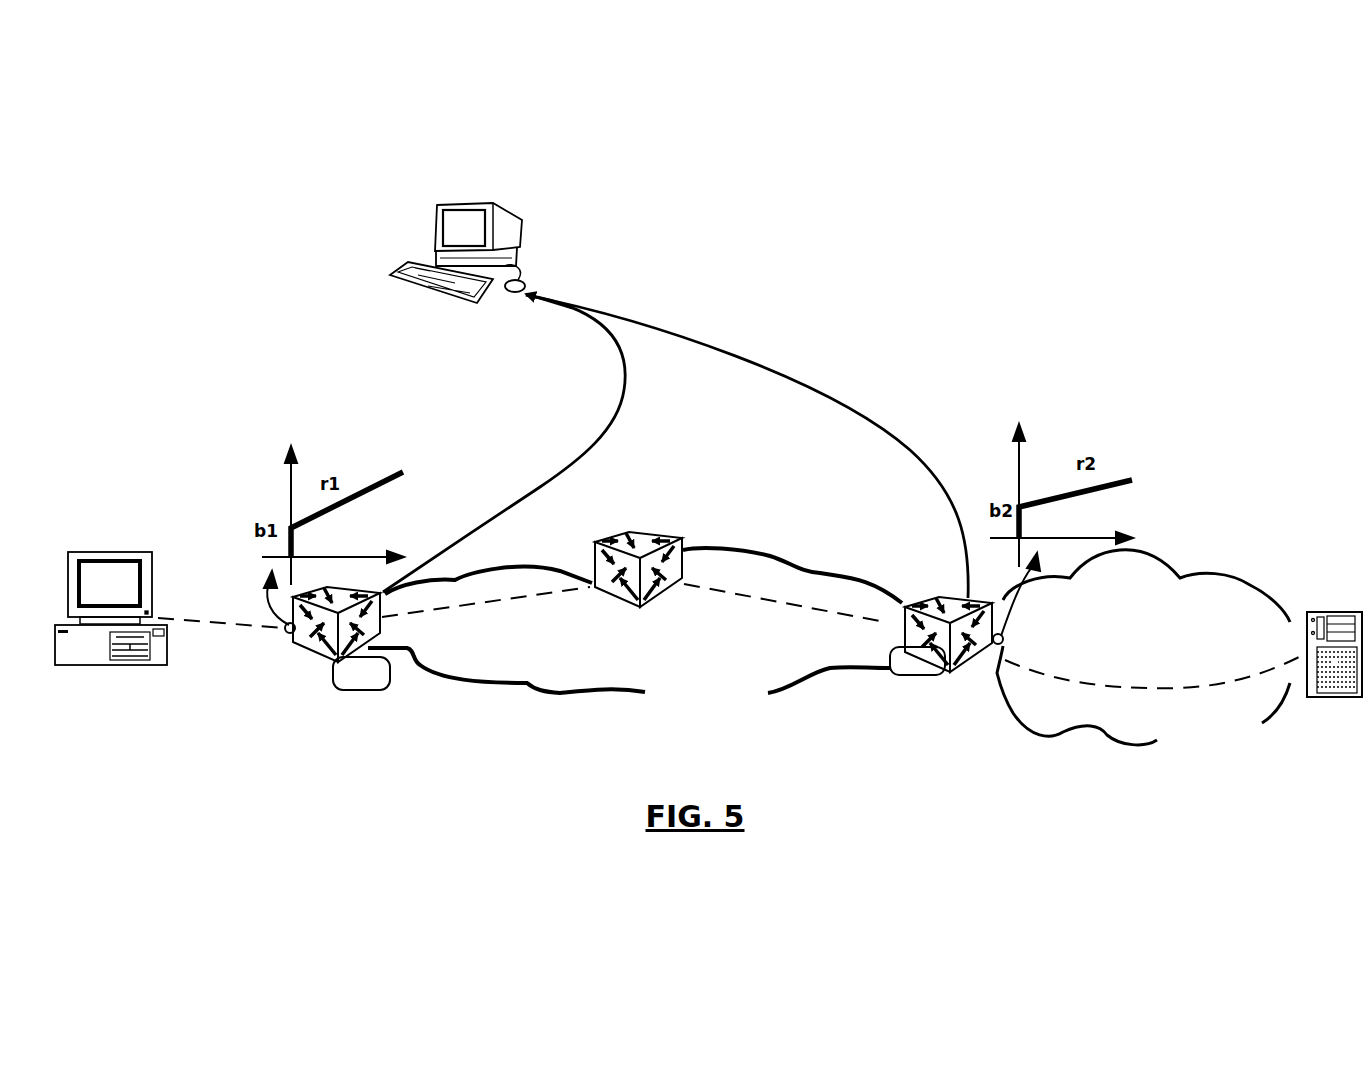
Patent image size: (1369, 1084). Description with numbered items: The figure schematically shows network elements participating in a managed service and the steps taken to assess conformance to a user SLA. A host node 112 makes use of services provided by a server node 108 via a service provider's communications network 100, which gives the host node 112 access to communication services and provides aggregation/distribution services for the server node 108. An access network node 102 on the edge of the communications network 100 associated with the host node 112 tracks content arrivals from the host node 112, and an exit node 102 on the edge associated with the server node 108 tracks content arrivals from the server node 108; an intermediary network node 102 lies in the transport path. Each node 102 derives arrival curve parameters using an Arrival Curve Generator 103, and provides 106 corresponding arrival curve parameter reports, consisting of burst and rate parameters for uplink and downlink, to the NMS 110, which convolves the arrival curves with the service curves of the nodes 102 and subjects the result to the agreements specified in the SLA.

The communications network 100 is at (562, 678).
The communications network node 102 is at (319, 660).
The arrival curve generator 103 is at (366, 690).
The arrival curve parameter report provision 106 is at (615, 430).
The server node 108 is at (1313, 612).
The network management system 110 is at (441, 212).
The host node 112 is at (104, 571).